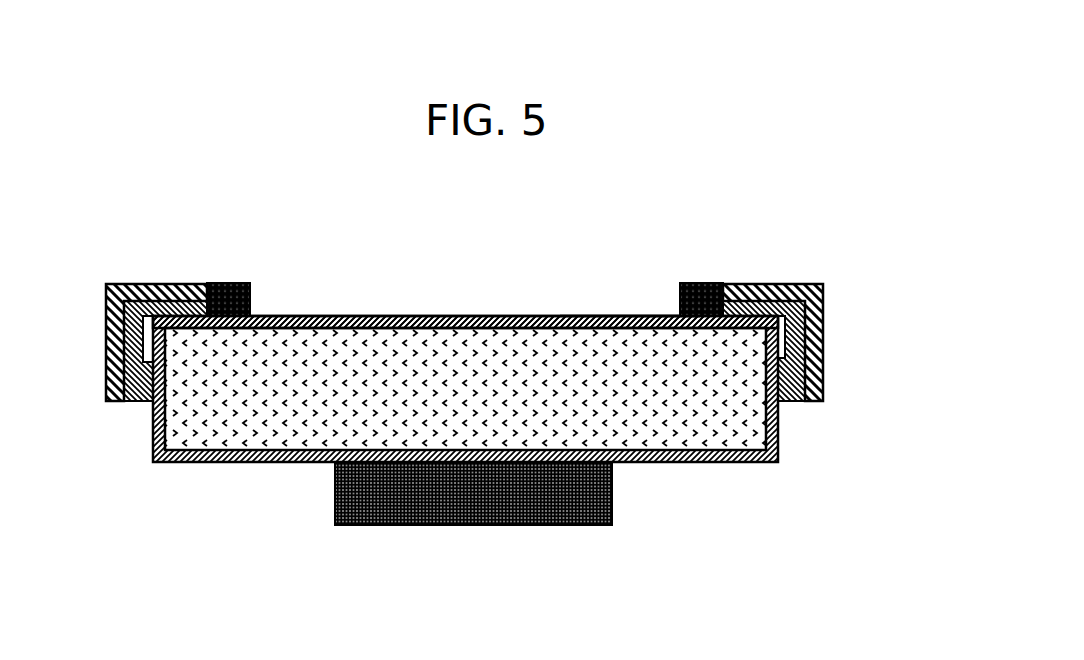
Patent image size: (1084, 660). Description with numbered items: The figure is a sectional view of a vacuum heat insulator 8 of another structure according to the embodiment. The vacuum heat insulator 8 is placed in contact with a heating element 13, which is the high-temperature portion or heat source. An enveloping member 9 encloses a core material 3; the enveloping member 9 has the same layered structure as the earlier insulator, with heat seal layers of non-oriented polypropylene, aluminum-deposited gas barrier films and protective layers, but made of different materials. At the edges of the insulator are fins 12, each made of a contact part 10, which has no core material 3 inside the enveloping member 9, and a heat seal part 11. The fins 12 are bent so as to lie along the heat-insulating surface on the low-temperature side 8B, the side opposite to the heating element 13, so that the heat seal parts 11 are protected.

The core material 3 is at (250, 425).
The vacuum heat insulator 8 is at (377, 300).
The heat-insulating surface on the low-temperature side 8B is at (622, 315).
The enveloping member 9 is at (485, 315).
The contact part 10 is at (823, 367).
The heat seal part 11 is at (708, 283).
The fin 12 is at (532, 303).
The heating element 13 is at (533, 525).